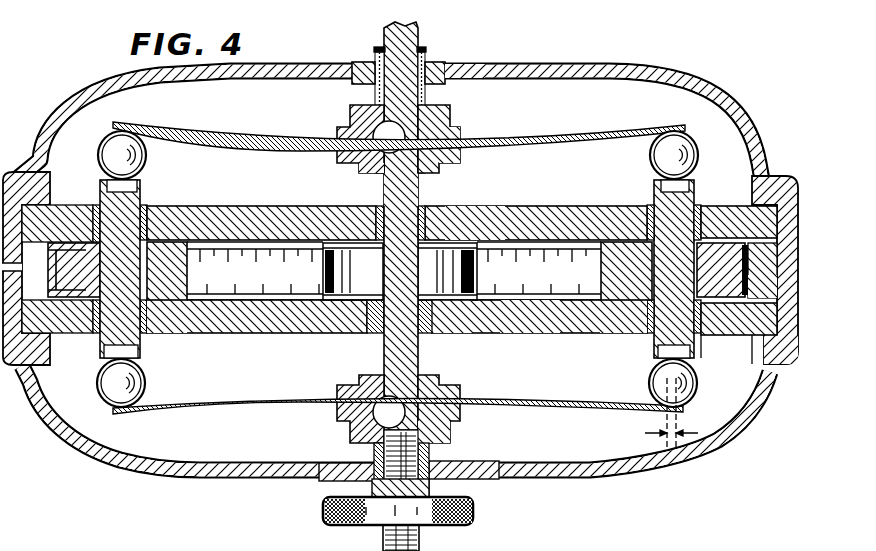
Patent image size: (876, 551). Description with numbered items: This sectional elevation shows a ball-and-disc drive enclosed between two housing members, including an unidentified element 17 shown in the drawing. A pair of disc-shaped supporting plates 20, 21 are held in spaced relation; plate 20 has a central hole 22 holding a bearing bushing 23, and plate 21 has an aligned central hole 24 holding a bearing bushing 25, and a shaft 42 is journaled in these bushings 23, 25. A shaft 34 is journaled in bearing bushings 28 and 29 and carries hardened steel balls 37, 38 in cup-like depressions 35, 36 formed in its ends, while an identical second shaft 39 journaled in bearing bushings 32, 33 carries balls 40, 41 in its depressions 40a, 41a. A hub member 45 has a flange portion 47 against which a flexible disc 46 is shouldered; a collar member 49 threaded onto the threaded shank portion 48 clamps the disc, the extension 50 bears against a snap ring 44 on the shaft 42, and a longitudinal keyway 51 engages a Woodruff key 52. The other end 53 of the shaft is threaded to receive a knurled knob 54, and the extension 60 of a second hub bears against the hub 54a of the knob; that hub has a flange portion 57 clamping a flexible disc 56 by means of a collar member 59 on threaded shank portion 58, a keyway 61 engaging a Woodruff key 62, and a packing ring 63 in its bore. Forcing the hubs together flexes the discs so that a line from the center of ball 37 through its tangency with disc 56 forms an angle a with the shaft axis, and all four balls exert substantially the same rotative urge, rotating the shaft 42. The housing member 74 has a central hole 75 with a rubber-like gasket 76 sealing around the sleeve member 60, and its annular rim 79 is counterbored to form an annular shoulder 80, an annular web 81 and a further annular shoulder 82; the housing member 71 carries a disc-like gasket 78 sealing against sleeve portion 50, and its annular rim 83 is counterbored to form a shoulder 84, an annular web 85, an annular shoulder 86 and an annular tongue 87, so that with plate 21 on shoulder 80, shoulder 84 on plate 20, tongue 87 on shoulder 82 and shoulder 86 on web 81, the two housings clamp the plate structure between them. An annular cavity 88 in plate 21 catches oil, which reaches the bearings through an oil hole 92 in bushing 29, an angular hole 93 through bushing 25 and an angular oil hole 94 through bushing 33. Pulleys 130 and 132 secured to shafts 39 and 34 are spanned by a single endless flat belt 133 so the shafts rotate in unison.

The upper housing wall 17 is at (452, 64).
The supporting plate 20 is at (532, 209).
The supporting plate 21 is at (240, 336).
The central hole 22 is at (430, 209).
The bearing bushing 23 is at (432, 220).
The central hole 24 is at (453, 331).
The bearing bushing 25 is at (372, 341).
The bearing bushing 28 is at (710, 206).
The bearing bushing 29 is at (726, 349).
The bearing bushing 32 is at (95, 203).
The bearing bushing 33 is at (95, 342).
The shaft 34 is at (640, 345).
The cup-like depression 35 is at (654, 362).
The cup-like depression 36 is at (655, 191).
The hardened steel ball 37 is at (696, 380).
The hardened steel ball 38 is at (698, 154).
The second shaft 39 is at (182, 208).
The hardened steel ball 40 is at (146, 383).
The cup-like depression 40a is at (100, 372).
The hardened steel ball 41 is at (147, 153).
The cup-like depression 41a is at (144, 191).
The shaft 42 is at (418, 200).
The snap ring 44 is at (410, 48).
The hub member 45 is at (346, 183).
The flexible disc 46 is at (468, 141).
The flange portion 47 is at (460, 152).
The threaded shank portion 48 is at (432, 109).
The collar member 49 is at (350, 112).
The extension 50 is at (426, 56).
The longitudinal keyway 51 is at (366, 180).
The Woodruff key 52 is at (352, 182).
The threaded end 53 is at (422, 538).
The knurled knob 54 is at (476, 512).
The hub 54a is at (348, 493).
The flexible disc 56 is at (516, 400).
The flange portion 57 is at (352, 386).
The threaded shank portion 58 is at (449, 434).
The collar member 59 is at (461, 416).
The extension 60 is at (440, 490).
The longitudinal keyway 61 is at (369, 464).
The Woodruff key 62 is at (343, 412).
The packing ring 63 is at (418, 348).
The housing member 71 is at (533, 68).
The housing member 74 is at (208, 474).
The central hole 75 is at (455, 463).
The gasket 76 is at (345, 464).
The disc-like gasket 78 is at (368, 62).
The annular rim 79 is at (785, 376).
The annular shoulder 80 is at (750, 349).
The annular web 81 is at (739, 318).
The annular shoulder 82 is at (787, 280).
The annular rim 83 is at (786, 175).
The shoulder 84 is at (743, 200).
The annular web 85 is at (739, 223).
The annular shoulder 86 is at (788, 262).
The annular tongue 87 is at (721, 270).
The annular cavity 88 is at (522, 326).
The oil hole 92 is at (617, 321).
The angular hole 93 is at (440, 320).
The angular oil hole 94 is at (156, 340).
The pulley 130 is at (180, 262).
The pulley 132 is at (609, 271).
The endless flat belt 133 is at (272, 351).
The angle a is at (671, 415).